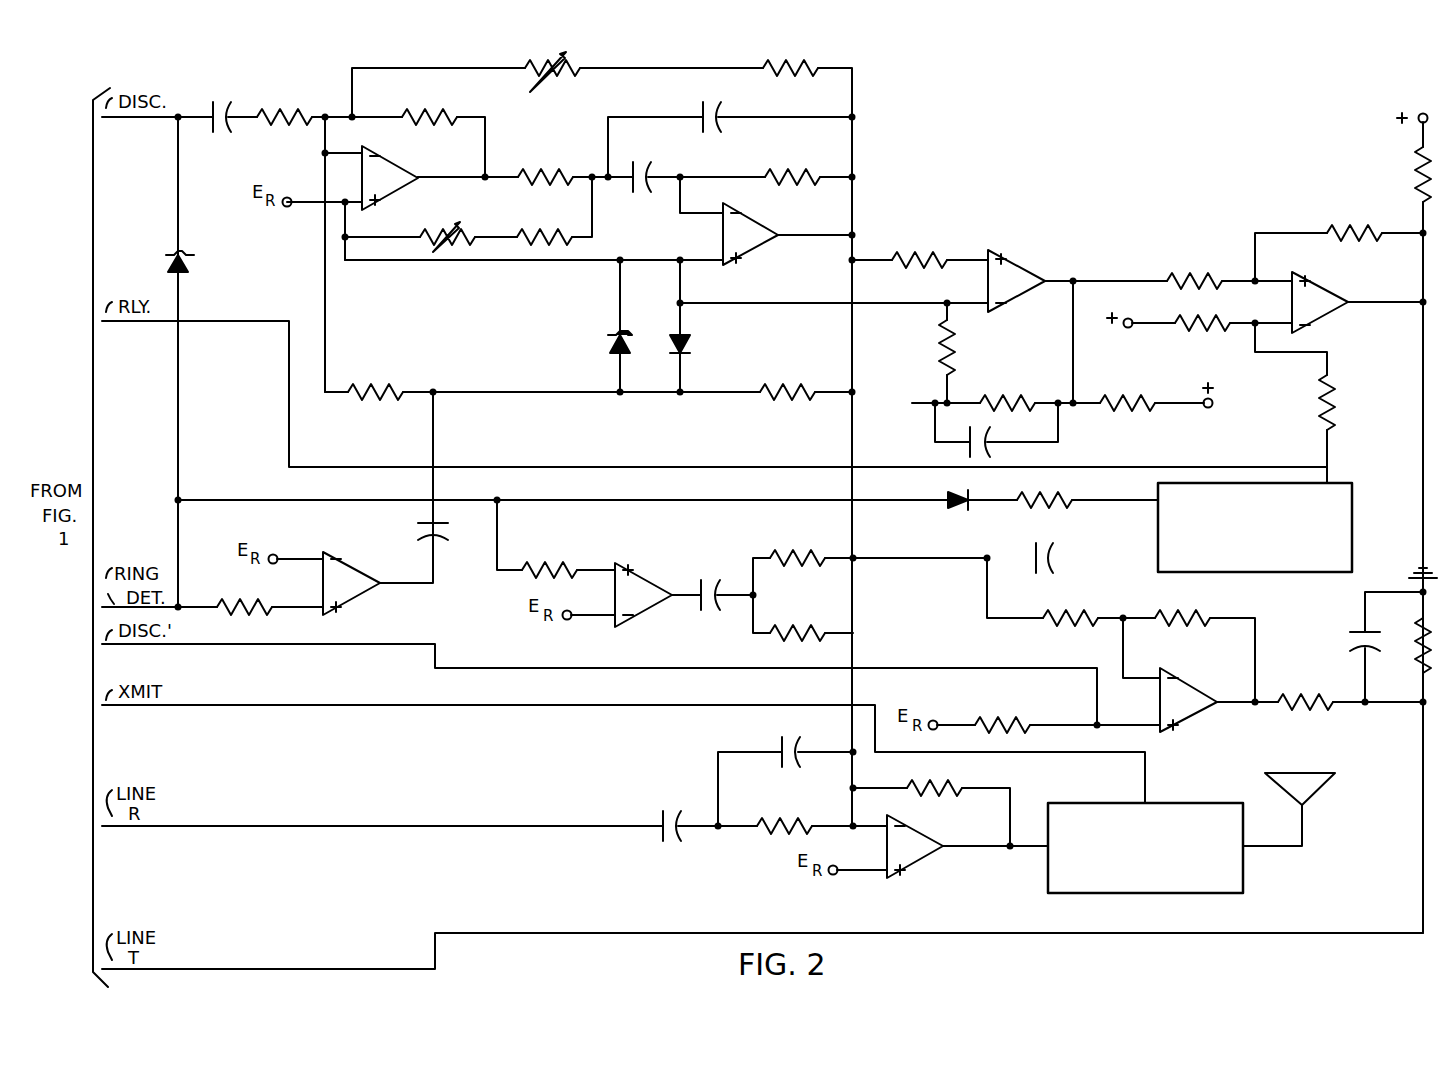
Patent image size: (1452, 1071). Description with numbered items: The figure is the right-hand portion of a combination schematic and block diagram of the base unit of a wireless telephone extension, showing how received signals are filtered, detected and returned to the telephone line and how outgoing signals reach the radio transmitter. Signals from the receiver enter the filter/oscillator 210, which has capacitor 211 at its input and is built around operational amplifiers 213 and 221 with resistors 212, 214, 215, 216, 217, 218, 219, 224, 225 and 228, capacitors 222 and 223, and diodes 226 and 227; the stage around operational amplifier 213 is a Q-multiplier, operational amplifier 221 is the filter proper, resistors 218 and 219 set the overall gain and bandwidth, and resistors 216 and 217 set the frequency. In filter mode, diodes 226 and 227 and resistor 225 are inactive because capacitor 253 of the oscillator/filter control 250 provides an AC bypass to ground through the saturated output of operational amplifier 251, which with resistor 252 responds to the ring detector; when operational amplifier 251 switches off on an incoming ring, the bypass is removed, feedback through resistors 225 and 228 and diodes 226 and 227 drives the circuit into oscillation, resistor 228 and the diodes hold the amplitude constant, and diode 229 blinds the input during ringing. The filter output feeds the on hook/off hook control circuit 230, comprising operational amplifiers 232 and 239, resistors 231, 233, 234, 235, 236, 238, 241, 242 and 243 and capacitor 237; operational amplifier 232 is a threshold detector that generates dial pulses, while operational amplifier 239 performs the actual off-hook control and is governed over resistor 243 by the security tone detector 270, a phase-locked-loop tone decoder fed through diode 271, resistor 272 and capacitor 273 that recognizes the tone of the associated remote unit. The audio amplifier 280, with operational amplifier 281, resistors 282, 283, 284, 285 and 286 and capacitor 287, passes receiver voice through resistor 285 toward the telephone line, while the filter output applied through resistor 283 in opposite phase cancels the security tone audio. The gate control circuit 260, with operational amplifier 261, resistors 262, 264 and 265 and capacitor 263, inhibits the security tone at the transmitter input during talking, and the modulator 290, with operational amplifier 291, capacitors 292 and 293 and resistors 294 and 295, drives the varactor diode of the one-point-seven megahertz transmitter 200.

The 1.7 MHz transmitter 200 is at (1128, 883).
The filter/oscillator 210 is at (475, 350).
The capacitor 211 is at (214, 110).
The resistor 212 is at (284, 110).
The operational amplifier 213 is at (394, 172).
The resistor 214 is at (432, 110).
The resistor 215 is at (544, 174).
The resistor 216 is at (444, 227).
The resistor 217 is at (527, 234).
The resistor 218 is at (533, 60).
The resistor 219 is at (764, 62).
The operational amplifier 221 is at (757, 230).
The capacitor 222 is at (644, 177).
The capacitor 223 is at (720, 112).
The resistor 224 is at (780, 174).
The resistor 225 is at (372, 389).
The diode 226 is at (602, 344).
The diode 227 is at (697, 338).
The resistor 228 is at (770, 389).
The diode 229 is at (188, 262).
The on hook/off hook control circuit 230 is at (1150, 370).
The resistor 231 is at (910, 257).
The operational amplifier 232 is at (1020, 270).
The resistor 233 is at (958, 343).
The resistor 234 is at (1002, 402).
The resistor 235 is at (1179, 280).
The resistor 236 is at (1179, 324).
The capacitor 237 is at (990, 444).
The resistor 238 is at (1130, 404).
The operational amplifier 239 is at (1333, 315).
The resistor 241 is at (1412, 166).
The resistor 242 is at (1344, 232).
The resistor 243 is at (1333, 392).
The oscillator/filter control 250 is at (313, 537).
The operational amplifier 251 is at (355, 600).
The resistor 252 is at (240, 604).
The capacitor 253 is at (422, 531).
The gate control circuit 260 is at (663, 537).
The operational amplifier 261 is at (642, 585).
The resistor 262 is at (538, 569).
The capacitor 263 is at (724, 602).
The resistor 264 is at (790, 554).
The resistor 265 is at (790, 629).
The security tone detector 270 is at (1238, 561).
The diode 271 is at (950, 512).
The resistor 272 is at (1052, 510).
The capacitor 273 is at (1054, 548).
The audio amplifier 280 is at (1220, 663).
The operational amplifier 281 is at (1195, 718).
The resistor 282 is at (997, 724).
The resistor 283 is at (1067, 615).
The resistor 284 is at (1179, 615).
The resistor 285 is at (1297, 700).
The resistor 286 is at (1418, 634).
The capacitor 287 is at (1352, 632).
The modulator 290 is at (975, 825).
The operational amplifier 291 is at (912, 866).
The capacitor 292 is at (667, 808).
The capacitor 293 is at (782, 745).
The resistor 294 is at (775, 819).
The resistor 295 is at (940, 792).